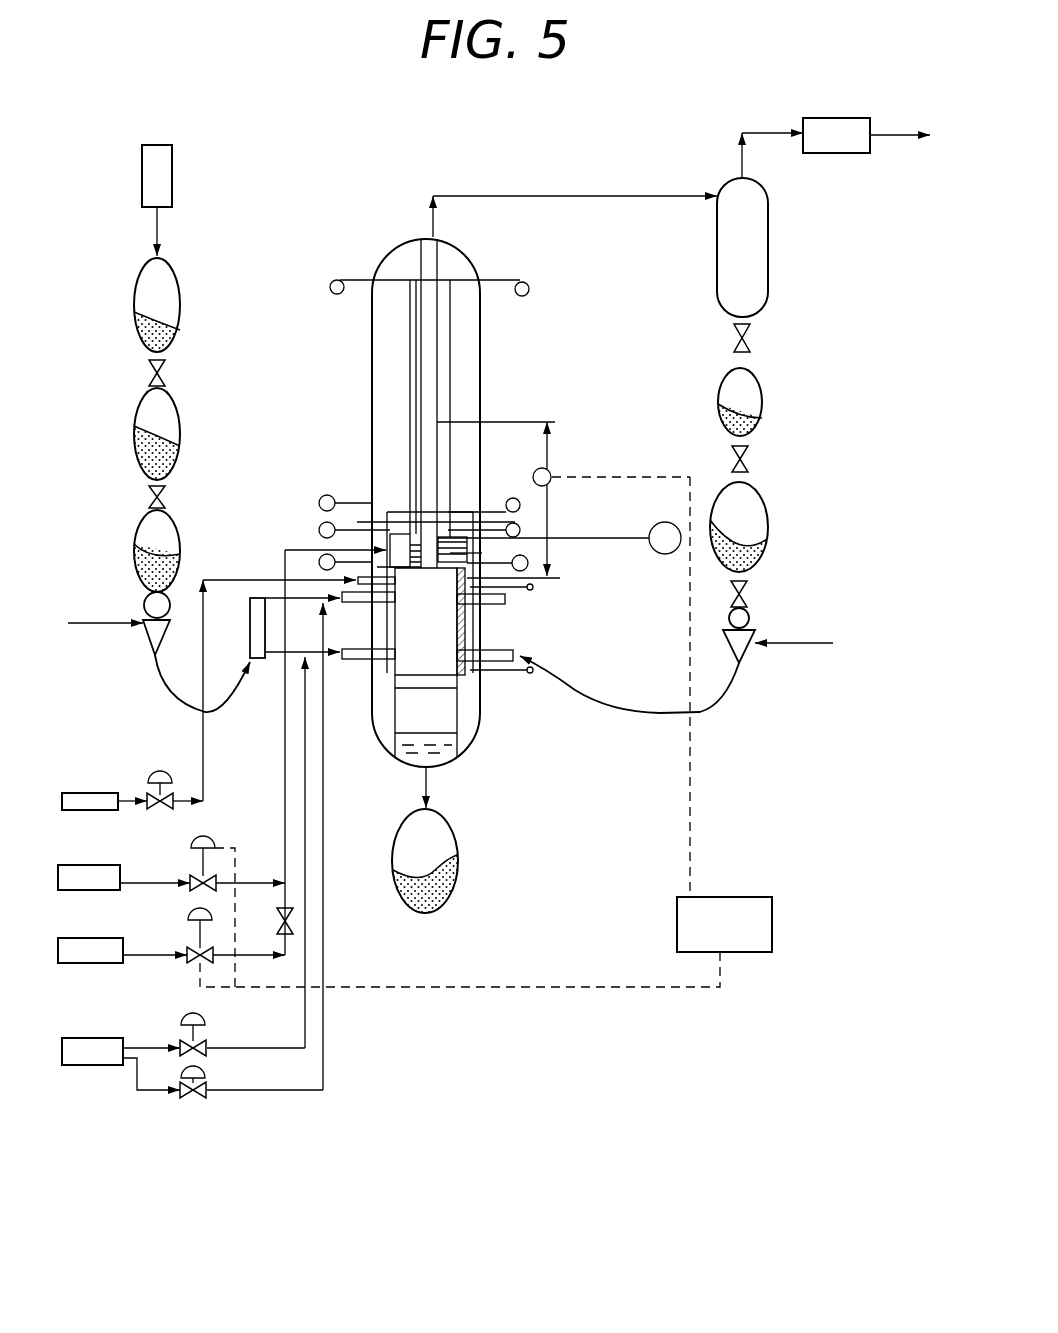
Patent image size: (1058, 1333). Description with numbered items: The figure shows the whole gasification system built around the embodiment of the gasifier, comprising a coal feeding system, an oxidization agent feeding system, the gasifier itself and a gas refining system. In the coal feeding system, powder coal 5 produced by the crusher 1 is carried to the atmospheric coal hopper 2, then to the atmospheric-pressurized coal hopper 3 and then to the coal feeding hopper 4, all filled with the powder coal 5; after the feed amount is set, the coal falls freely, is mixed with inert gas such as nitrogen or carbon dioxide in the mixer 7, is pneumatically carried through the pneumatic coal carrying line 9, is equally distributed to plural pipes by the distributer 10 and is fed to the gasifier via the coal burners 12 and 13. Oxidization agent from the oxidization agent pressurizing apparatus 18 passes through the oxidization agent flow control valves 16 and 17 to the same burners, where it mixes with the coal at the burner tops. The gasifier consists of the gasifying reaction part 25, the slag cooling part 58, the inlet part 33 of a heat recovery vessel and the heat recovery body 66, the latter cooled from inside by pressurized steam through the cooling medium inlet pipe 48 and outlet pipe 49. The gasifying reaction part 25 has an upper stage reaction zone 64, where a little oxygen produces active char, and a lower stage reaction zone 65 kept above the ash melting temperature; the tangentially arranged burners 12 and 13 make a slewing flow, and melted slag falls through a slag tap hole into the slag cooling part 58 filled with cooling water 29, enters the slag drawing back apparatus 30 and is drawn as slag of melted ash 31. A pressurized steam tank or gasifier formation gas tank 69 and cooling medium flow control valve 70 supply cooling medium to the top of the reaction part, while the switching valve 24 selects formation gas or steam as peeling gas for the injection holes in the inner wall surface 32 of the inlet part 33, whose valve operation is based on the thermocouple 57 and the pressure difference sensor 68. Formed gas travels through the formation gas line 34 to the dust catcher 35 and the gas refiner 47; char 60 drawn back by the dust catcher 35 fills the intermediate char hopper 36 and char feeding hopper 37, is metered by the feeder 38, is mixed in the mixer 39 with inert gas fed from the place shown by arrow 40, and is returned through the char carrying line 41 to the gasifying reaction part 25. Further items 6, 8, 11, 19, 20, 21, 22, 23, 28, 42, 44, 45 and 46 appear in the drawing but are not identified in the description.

The crusher 1 is at (172, 170).
The atmospheric coal hopper 2 is at (181, 300).
The atmospheric-pressurized coal hopper 3 is at (135, 420).
The coal feeding hopper 4 is at (140, 525).
The powder coal 5 is at (133, 318).
The rotary feeder 6 is at (143, 600).
The mixer 7 is at (145, 648).
The carrier gas inlet 8 is at (82, 625).
The pneumatic coal carrying line 9 is at (185, 705).
The distributer 10 is at (250, 625).
The feed line 11 is at (280, 593).
The coal burners 12 is at (355, 605).
The coal burners 13 is at (355, 662).
The oxidization agent flow control valve 16 is at (205, 1020).
The oxidization agent flow control valve 17 is at (190, 1098).
The oxidization agent pressurizing apparatus 18 is at (75, 1065).
The gas source 19 is at (85, 890).
The control valve 20 is at (192, 845).
The gas feed line 21 is at (287, 548).
The gas source 22 is at (70, 963).
The control valve 23 is at (190, 962).
The switching valve 24 is at (292, 920).
The gasifying reaction part 25 is at (467, 628).
The melt level 28 is at (420, 690).
The cooling water 29 is at (455, 770).
The slag drawing back apparatus 30 is at (455, 855).
The slag of melted ash 31 is at (455, 882).
The inner wall surface 32 is at (450, 552).
The inlet part of heat recovery vessel 33 is at (480, 553).
The formation gas line 34 is at (522, 193).
The dust catcher 35 is at (768, 270).
The intermediate char hopper 36 is at (762, 390).
The char feeding hopper 37 is at (768, 512).
The feeder 38 is at (750, 616).
The mixer 39 is at (745, 655).
The arrow 40 is at (833, 643).
The char carrying line 41 is at (660, 712).
The sensor 42 is at (663, 555).
The signal line 44 is at (690, 827).
The controller 45 is at (752, 897).
The control line 46 is at (510, 987).
The gas refiner 47 is at (836, 153).
The cooling medium inlet pipe 48 is at (322, 497).
The outlet pipe 49 is at (332, 282).
The thermocouple 57 is at (605, 538).
The slag cooling part 58 is at (470, 695).
The char 60 is at (755, 430).
The upper stage reaction zone 64 is at (426, 595).
The lower stage reaction zone 65 is at (426, 648).
The heat recovery body 66 is at (372, 385).
The pressure difference sensor 68 is at (550, 470).
The pressurized steam tank or gasifier formation gas tank 69 is at (85, 812).
The cooling medium flow control valve 70 is at (148, 776).